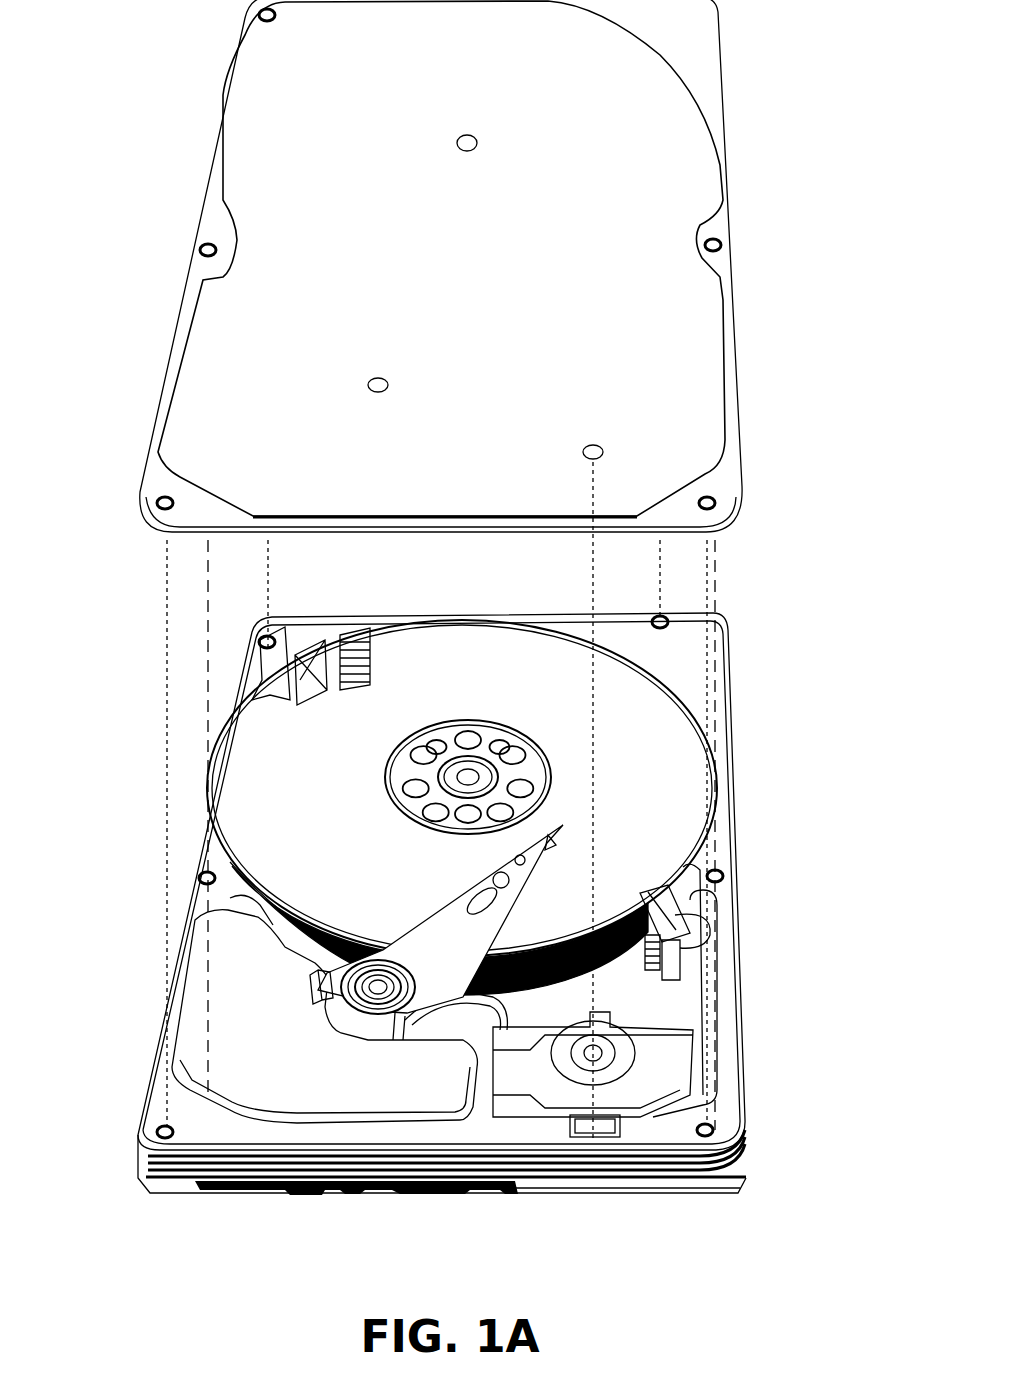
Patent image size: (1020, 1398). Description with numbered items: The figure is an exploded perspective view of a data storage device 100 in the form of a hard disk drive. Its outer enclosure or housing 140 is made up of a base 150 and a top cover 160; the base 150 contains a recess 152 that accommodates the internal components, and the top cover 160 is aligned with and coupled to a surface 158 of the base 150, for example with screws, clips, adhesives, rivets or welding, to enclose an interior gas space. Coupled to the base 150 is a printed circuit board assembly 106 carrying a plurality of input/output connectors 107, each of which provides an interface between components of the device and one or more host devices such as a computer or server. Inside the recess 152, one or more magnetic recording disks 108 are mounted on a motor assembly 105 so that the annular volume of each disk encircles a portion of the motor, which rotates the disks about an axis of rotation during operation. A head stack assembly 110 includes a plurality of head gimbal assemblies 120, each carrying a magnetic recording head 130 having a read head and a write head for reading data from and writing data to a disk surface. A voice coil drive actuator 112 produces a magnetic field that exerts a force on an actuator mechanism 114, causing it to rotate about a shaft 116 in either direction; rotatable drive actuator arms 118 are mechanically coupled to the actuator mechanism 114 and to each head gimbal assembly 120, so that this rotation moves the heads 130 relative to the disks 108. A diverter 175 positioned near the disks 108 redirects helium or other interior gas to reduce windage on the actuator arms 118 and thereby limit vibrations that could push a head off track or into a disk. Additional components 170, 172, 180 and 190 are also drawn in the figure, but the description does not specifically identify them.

The data storage device 100 is at (163, 56).
The motor assembly 105 is at (392, 745).
The printed circuit board assembly 106 is at (290, 1200).
The input/output connectors 107 is at (317, 1194).
The magnetic recording disk 108 is at (626, 791).
The head stack assembly 110 is at (493, 993).
The voice coil drive actuator 112 is at (236, 1055).
The actuator mechanism 114 is at (330, 988).
The shaft 116 is at (376, 975).
The rotatable drive actuator arms 118 is at (440, 935).
The head gimbal assembly 120 is at (548, 845).
The magnetic recording head 130 is at (564, 827).
The housing 140 is at (748, 210).
The base 150 is at (155, 1062).
The recess 152 is at (228, 884).
The surface 158 is at (690, 642).
The top cover 160 is at (438, 280).
The voice coil motor 170 is at (643, 1079).
The motor pivot 172 is at (572, 1068).
The diverter 175 is at (360, 632).
The latch 180 is at (305, 660).
The connector 190 is at (593, 1142).